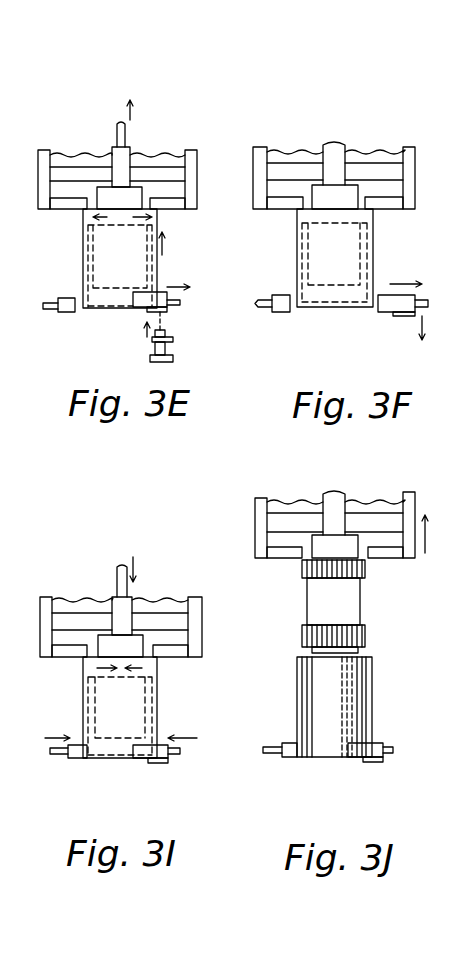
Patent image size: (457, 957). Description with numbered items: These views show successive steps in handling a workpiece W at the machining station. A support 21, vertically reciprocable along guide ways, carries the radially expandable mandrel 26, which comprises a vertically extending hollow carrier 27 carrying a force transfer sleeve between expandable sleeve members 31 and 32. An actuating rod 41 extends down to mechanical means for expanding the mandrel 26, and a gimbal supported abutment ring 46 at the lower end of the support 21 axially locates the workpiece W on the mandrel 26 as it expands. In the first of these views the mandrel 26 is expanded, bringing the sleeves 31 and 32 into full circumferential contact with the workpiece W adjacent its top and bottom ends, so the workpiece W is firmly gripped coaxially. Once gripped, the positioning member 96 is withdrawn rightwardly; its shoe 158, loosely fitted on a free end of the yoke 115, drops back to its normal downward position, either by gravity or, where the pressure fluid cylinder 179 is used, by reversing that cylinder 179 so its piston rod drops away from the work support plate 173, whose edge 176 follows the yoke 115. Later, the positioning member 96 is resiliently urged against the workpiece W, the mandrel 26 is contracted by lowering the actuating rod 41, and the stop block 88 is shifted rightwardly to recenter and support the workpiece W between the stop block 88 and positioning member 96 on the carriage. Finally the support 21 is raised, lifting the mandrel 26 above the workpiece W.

In FIG. 3J, the support 21 is at (280, 508).
In FIG. 3E, the radially expandable mandrel 26 is at (93, 252).
In FIG. 3F, the radially expandable mandrel 26 is at (308, 246).
In FIG. 3I, the radially expandable mandrel 26 is at (155, 690).
In FIG. 3J, the radially expandable mandrel 26 is at (350, 602).
In FIG. 3E, the hollow carrier 27 is at (106, 192).
In FIG. 3E, the expandable sleeve member 31 is at (158, 214).
In FIG. 3E, the expandable sleeve member 32 is at (158, 290).
In FIG. 3E, the actuating rod 41 is at (127, 138).
In FIG. 3I, the actuating rod 41 is at (117, 575).
In FIG. 3E, the abutment ring 46 is at (165, 203).
In FIG. 3I, the stop block 88 is at (75, 758).
In FIG. 3E, the positioning member 96 is at (135, 320).
In FIG. 3F, the positioning member 96 is at (378, 324).
In FIG. 3I, the positioning member 96 is at (166, 767).
In FIG. 3E, the yoke 115 is at (180, 304).
In FIG. 3F, the yoke 115 is at (423, 299).
In FIG. 3E, the shoe 158 is at (137, 305).
In FIG. 3F, the shoe 158 is at (385, 295).
In FIG. 3F, the work support plate 173 is at (400, 316).
In FIG. 3E, the edge 176 is at (160, 312).
In FIG. 3E, the pressure fluid cylinder 179 is at (167, 347).
In FIG. 3E, the workpiece W is at (83, 235).
In FIG. 3F, the workpiece W is at (297, 233).
In FIG. 3I, the workpiece W is at (157, 708).
In FIG. 3J, the workpiece W is at (362, 683).